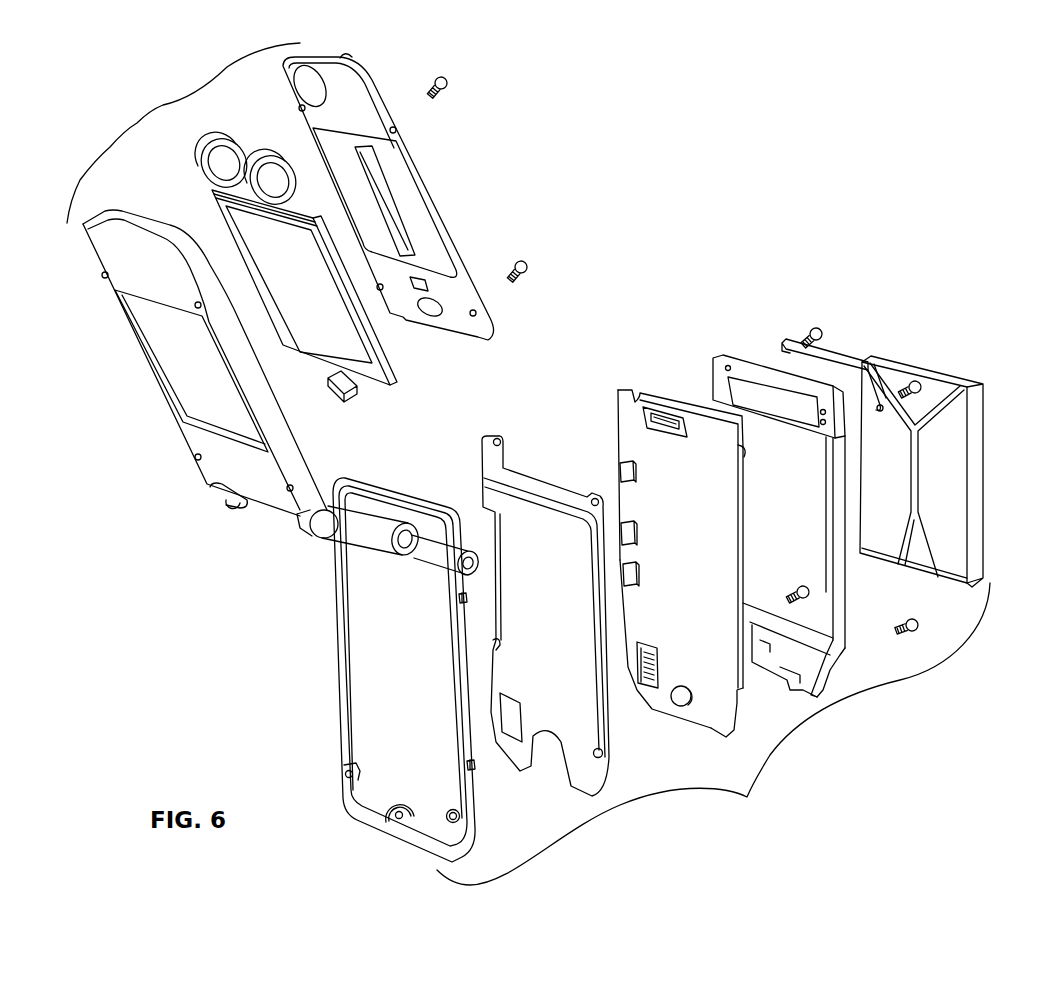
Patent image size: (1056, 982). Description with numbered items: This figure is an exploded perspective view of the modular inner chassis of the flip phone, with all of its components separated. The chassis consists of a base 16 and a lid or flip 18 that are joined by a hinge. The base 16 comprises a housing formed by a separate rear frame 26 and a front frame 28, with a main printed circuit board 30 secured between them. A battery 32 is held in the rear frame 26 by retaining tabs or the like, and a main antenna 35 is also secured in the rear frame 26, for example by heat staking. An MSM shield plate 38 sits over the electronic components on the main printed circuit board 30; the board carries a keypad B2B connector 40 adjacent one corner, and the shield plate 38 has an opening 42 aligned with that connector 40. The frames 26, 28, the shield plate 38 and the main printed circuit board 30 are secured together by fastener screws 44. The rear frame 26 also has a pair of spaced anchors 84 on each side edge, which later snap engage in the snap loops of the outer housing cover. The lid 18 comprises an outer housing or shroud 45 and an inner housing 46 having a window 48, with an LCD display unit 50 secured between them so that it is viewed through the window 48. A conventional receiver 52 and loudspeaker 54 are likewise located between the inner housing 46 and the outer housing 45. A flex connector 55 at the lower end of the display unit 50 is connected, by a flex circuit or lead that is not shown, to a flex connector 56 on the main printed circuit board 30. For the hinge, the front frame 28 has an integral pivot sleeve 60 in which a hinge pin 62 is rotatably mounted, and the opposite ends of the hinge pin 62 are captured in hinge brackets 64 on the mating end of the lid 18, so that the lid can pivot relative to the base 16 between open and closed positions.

The base 16 is at (713, 734).
The lid 18 is at (183, 133).
The rear frame 26 is at (844, 588).
The front frame 28 is at (467, 781).
The main printed circuit board 30 is at (724, 713).
The battery 32 is at (975, 483).
The main antenna 35 is at (831, 354).
The MSM shield plate 38 is at (522, 510).
The keypad B2B connector 40 is at (645, 690).
The opening 42 is at (524, 765).
The fastener screws 44 is at (808, 330).
The outer housing 45 is at (447, 290).
The inner housing 46 is at (292, 450).
The window 48 is at (188, 382).
The LCD display unit 50 is at (357, 345).
The receiver 52 is at (260, 168).
The loudspeaker 54 is at (210, 160).
The flex connector 55 is at (363, 400).
The flex connector 56 is at (661, 410).
The pivot sleeve 60 is at (362, 517).
The hinge pin 62 is at (437, 550).
The hinge brackets 64 is at (297, 527).
The anchors 84 is at (468, 597).